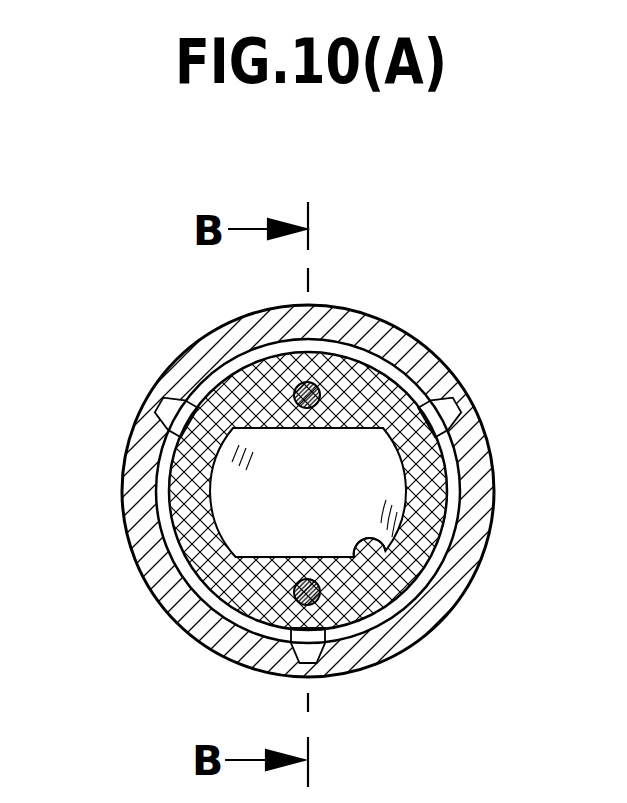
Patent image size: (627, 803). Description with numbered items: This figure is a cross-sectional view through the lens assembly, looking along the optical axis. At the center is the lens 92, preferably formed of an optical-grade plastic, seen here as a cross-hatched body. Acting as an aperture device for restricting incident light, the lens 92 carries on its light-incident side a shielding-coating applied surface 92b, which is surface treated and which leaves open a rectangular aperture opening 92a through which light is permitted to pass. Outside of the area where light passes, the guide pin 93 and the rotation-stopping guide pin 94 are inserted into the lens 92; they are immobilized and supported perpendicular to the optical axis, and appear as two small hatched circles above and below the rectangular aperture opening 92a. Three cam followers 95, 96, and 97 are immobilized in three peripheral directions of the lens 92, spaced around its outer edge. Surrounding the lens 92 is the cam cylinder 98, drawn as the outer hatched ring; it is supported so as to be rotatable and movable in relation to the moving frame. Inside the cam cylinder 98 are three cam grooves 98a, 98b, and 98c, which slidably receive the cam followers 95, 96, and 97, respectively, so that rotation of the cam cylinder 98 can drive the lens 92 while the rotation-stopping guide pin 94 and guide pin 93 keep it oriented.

The lens 92 is at (360, 510).
The rectangular aperture opening 92a is at (373, 548).
The shielding-coating applied surface 92b is at (175, 590).
The guide pin 93 is at (321, 388).
The rotation-stopping guide pin 94 is at (295, 598).
The cam follower 95 is at (457, 402).
The cam follower 96 is at (167, 412).
The cam follower 97 is at (308, 655).
The cam cylinder 98 is at (407, 333).
The cam groove 98a is at (455, 425).
The cam groove 98b is at (172, 397).
The cam groove 98c is at (360, 657).